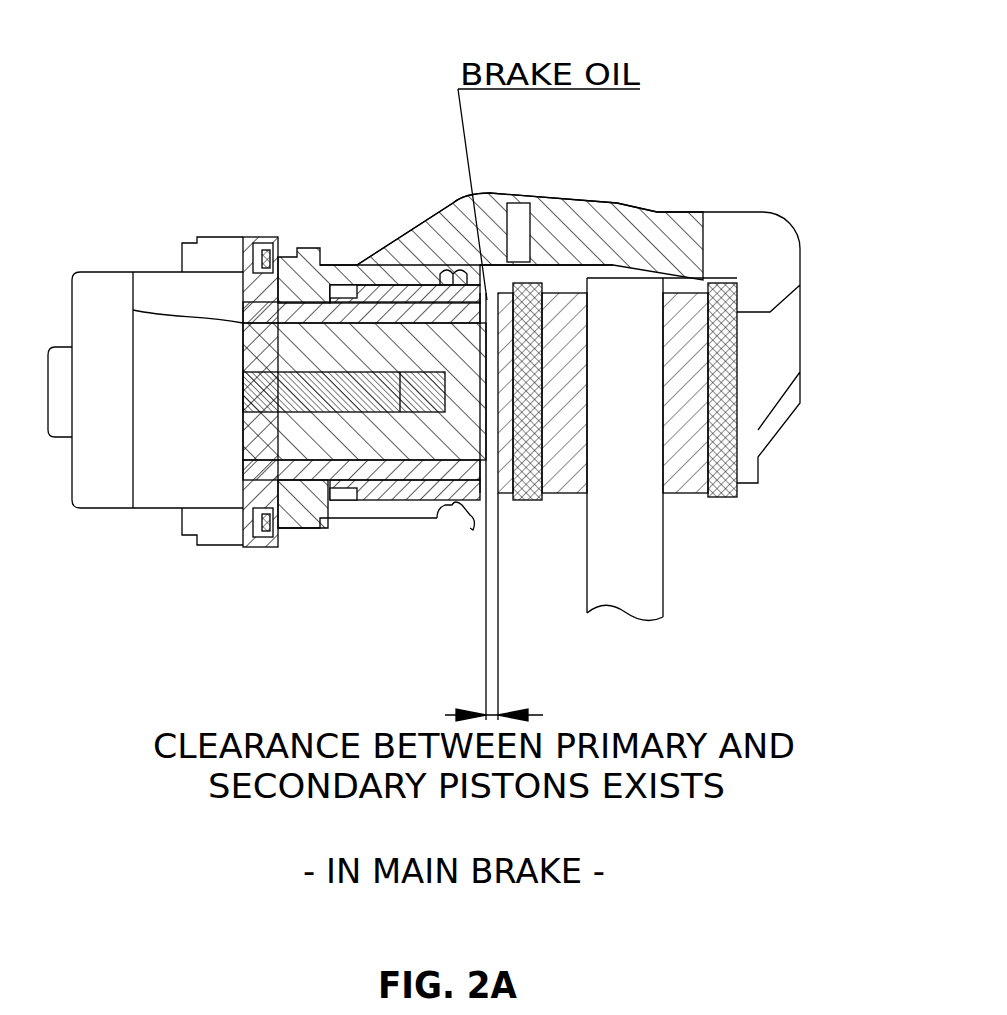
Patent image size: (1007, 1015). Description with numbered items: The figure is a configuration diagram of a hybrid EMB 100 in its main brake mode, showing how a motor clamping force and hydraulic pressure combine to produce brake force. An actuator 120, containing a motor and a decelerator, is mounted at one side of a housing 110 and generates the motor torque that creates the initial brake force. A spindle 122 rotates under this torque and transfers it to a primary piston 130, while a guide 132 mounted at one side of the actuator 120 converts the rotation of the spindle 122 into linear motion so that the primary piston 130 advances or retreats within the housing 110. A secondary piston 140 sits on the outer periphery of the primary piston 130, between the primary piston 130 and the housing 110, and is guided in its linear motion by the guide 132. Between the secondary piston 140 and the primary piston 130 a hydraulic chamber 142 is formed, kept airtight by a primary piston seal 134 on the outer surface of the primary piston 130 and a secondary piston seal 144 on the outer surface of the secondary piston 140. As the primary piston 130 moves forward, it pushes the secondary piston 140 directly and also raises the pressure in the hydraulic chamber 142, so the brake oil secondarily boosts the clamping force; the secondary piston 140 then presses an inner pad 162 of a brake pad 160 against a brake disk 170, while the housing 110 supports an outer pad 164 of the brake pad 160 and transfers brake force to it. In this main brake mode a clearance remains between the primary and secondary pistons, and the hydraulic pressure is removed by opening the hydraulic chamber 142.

The hybrid EMB 100 is at (374, 180).
The housing 110 is at (380, 263).
The actuator 120 is at (160, 473).
The spindle 122 is at (258, 345).
The primary piston 130 is at (137, 310).
The guide 132 is at (258, 292).
The primary piston seal 134 is at (455, 463).
The secondary piston 140 is at (443, 283).
The hydraulic chamber 142 is at (497, 337).
The secondary piston seal 144 is at (441, 507).
The brake pad 160 is at (689, 477).
The inner pad 162 is at (560, 490).
The outer pad 164 is at (683, 475).
The brake disk 170 is at (643, 583).